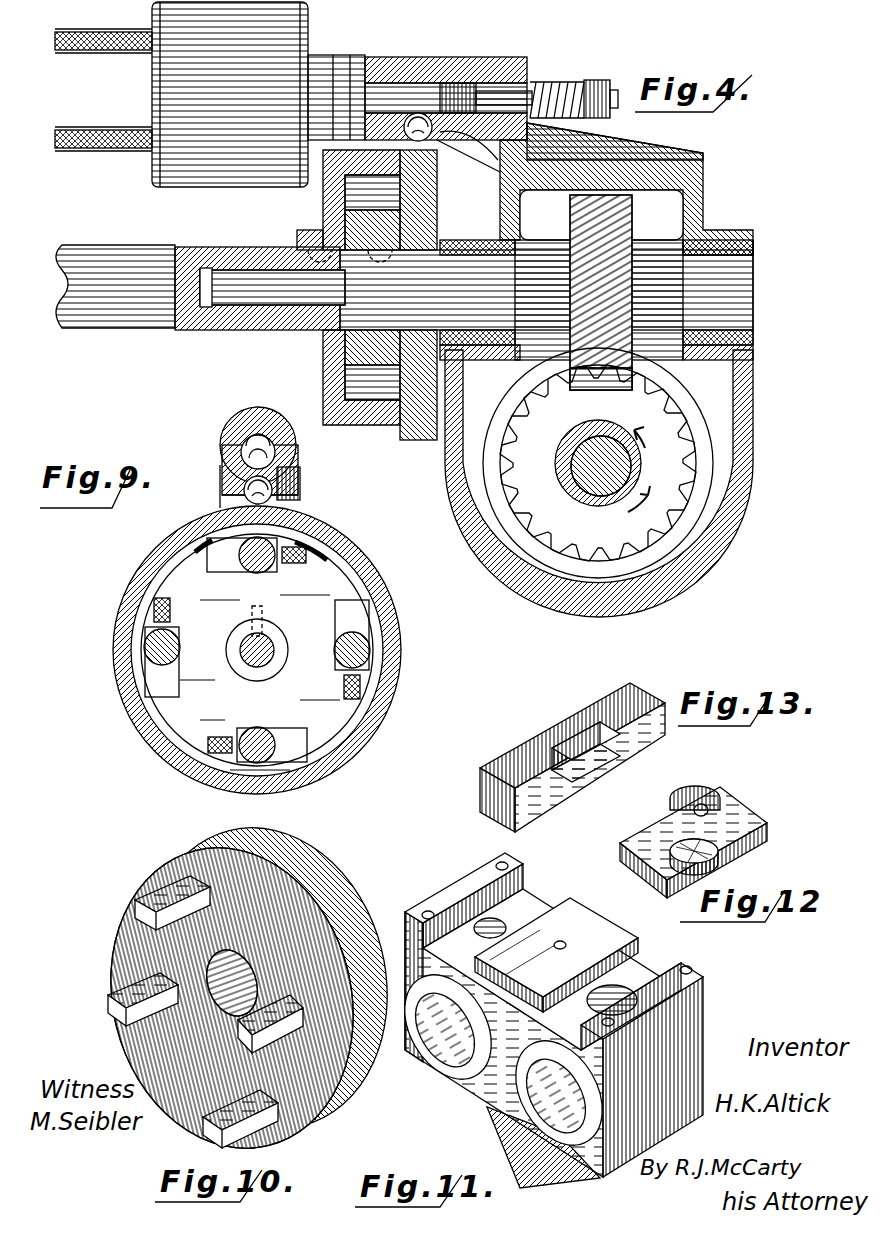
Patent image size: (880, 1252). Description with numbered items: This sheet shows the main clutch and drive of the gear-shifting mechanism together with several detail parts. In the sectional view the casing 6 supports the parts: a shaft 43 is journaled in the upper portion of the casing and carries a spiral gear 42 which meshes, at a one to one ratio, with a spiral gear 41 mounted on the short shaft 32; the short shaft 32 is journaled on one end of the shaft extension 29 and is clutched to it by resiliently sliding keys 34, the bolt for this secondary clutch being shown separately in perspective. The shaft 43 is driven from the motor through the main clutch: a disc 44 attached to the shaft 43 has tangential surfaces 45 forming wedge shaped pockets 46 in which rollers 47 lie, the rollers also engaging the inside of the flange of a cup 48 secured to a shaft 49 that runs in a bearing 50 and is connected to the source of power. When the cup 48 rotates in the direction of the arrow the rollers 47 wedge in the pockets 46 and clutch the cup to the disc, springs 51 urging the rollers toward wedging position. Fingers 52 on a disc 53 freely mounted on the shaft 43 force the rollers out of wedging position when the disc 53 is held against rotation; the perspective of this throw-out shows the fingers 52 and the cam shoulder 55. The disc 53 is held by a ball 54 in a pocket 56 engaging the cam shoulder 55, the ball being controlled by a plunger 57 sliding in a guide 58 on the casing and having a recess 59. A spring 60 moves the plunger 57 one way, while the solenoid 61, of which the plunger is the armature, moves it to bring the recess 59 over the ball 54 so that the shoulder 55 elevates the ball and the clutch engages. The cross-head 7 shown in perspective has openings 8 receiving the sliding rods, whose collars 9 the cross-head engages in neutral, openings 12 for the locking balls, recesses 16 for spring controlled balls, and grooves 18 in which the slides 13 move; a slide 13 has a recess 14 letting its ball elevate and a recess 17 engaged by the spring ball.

In FIG. 4, the casing 6 is at (698, 208).
In FIG. 11, the cross-heads 7 is at (410, 906).
In FIG. 11, the openings 8 is at (448, 1040).
In FIG. 4, the collars 9 is at (419, 112).
In FIG. 11, the openings 12 is at (488, 926).
In FIG. 12, the slides 13 is at (650, 835).
In FIG. 12, the recesses 14 is at (740, 864).
In FIG. 11, the recesses 16 is at (525, 962).
In FIG. 12, the recesses 17 is at (708, 808).
In FIG. 11, the grooves 18 is at (655, 962).
In FIG. 4, the shaft extension 29 is at (580, 458).
In FIG. 4, the short shaft 32 is at (595, 435).
In FIG. 13, the sliding keys 34 is at (604, 704).
In FIG. 4, the spiral gear 41 is at (660, 420).
In FIG. 4, the spiral gear 42 is at (605, 215).
In FIG. 4, the shaft 43 is at (546, 300).
In FIG. 9, the shaft 43 is at (247, 662).
In FIG. 9, the disc 44 is at (274, 650).
In FIG. 9, the tangential surfaces 45 is at (248, 730).
In FIG. 9, the pockets 46 is at (238, 762).
In FIG. 4, the rollers 47 is at (376, 428).
In FIG. 9, the rollers 47 is at (132, 638).
In FIG. 4, the cup 48 is at (323, 406).
In FIG. 9, the cup 48 is at (134, 574).
In FIG. 4, the shaft 49 is at (188, 252).
In FIG. 4, the bearing 50 is at (256, 272).
In FIG. 9, the bearing 50 is at (252, 610).
In FIG. 9, the springs 51 is at (320, 562).
In FIG. 4, the fingers 52 is at (355, 183).
In FIG. 9, the fingers 52 is at (352, 606).
In FIG. 10, the fingers 52 is at (106, 1012).
In FIG. 4, the disc 53 is at (418, 442).
In FIG. 10, the disc 53 is at (115, 955).
In FIG. 4, the ball 54 is at (430, 140).
In FIG. 9, the ball 54 is at (244, 492).
In FIG. 9, the cam shoulder 55 is at (300, 510).
In FIG. 10, the cam shoulder 55 is at (255, 870).
In FIG. 4, the pocket 56 is at (485, 160).
In FIG. 9, the pocket 56 is at (246, 478).
In FIG. 4, the plunger 57 is at (382, 95).
In FIG. 9, the plunger 57 is at (250, 446).
In FIG. 4, the guide 58 is at (505, 62).
In FIG. 9, the guide 58 is at (262, 420).
In FIG. 4, the recess 59 is at (456, 90).
In FIG. 4, the spring 60 is at (548, 86).
In FIG. 4, the solenoid 61 is at (163, 76).